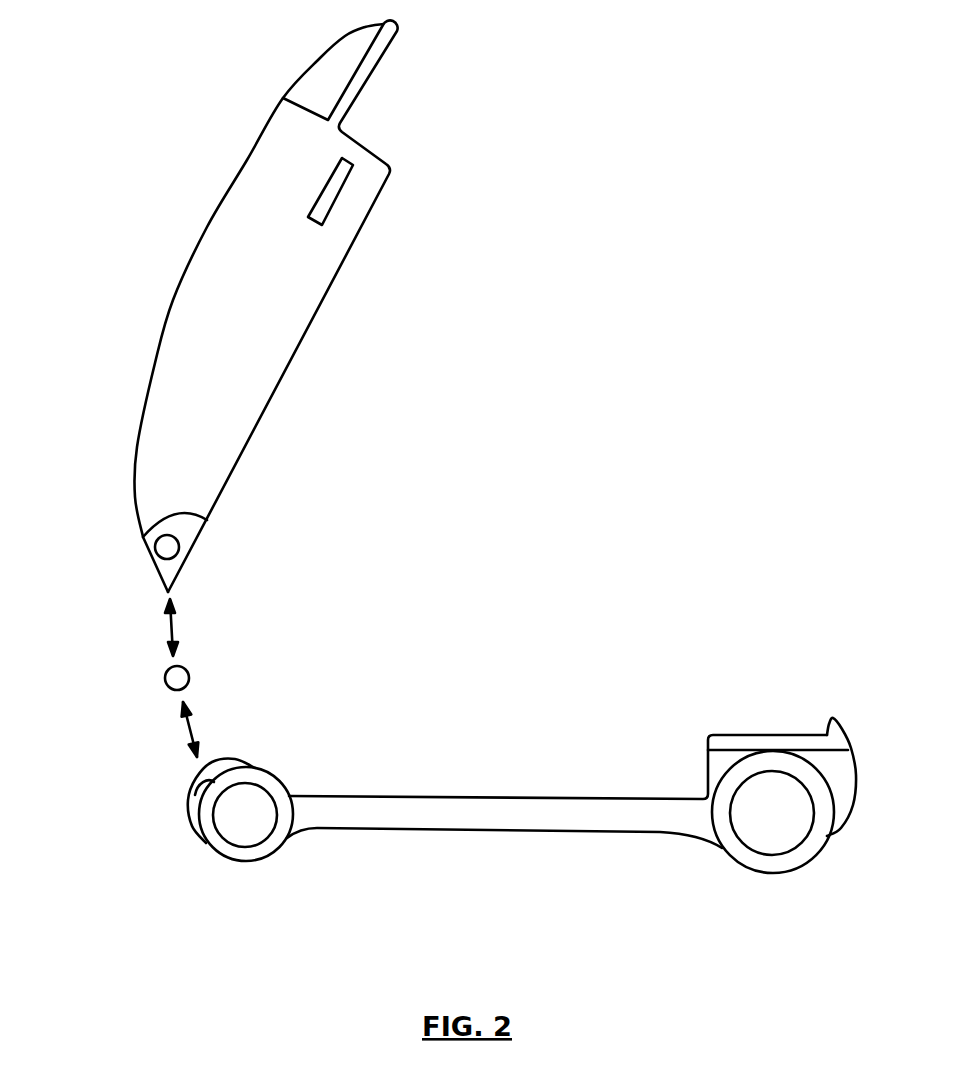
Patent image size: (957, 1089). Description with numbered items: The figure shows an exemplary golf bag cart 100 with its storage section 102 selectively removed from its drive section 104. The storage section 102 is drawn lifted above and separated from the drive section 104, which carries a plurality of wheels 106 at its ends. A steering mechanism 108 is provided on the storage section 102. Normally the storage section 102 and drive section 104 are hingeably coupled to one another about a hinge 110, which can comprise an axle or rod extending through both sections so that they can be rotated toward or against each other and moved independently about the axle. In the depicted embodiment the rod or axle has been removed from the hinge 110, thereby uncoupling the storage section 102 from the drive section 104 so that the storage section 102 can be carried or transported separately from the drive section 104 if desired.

The golf bag cart 100 is at (618, 427).
The storage section 102 is at (203, 305).
The drive section 104 is at (532, 828).
The wheels 106 is at (237, 832).
The steering mechanism 108 is at (337, 185).
The hinge 110 is at (173, 680).